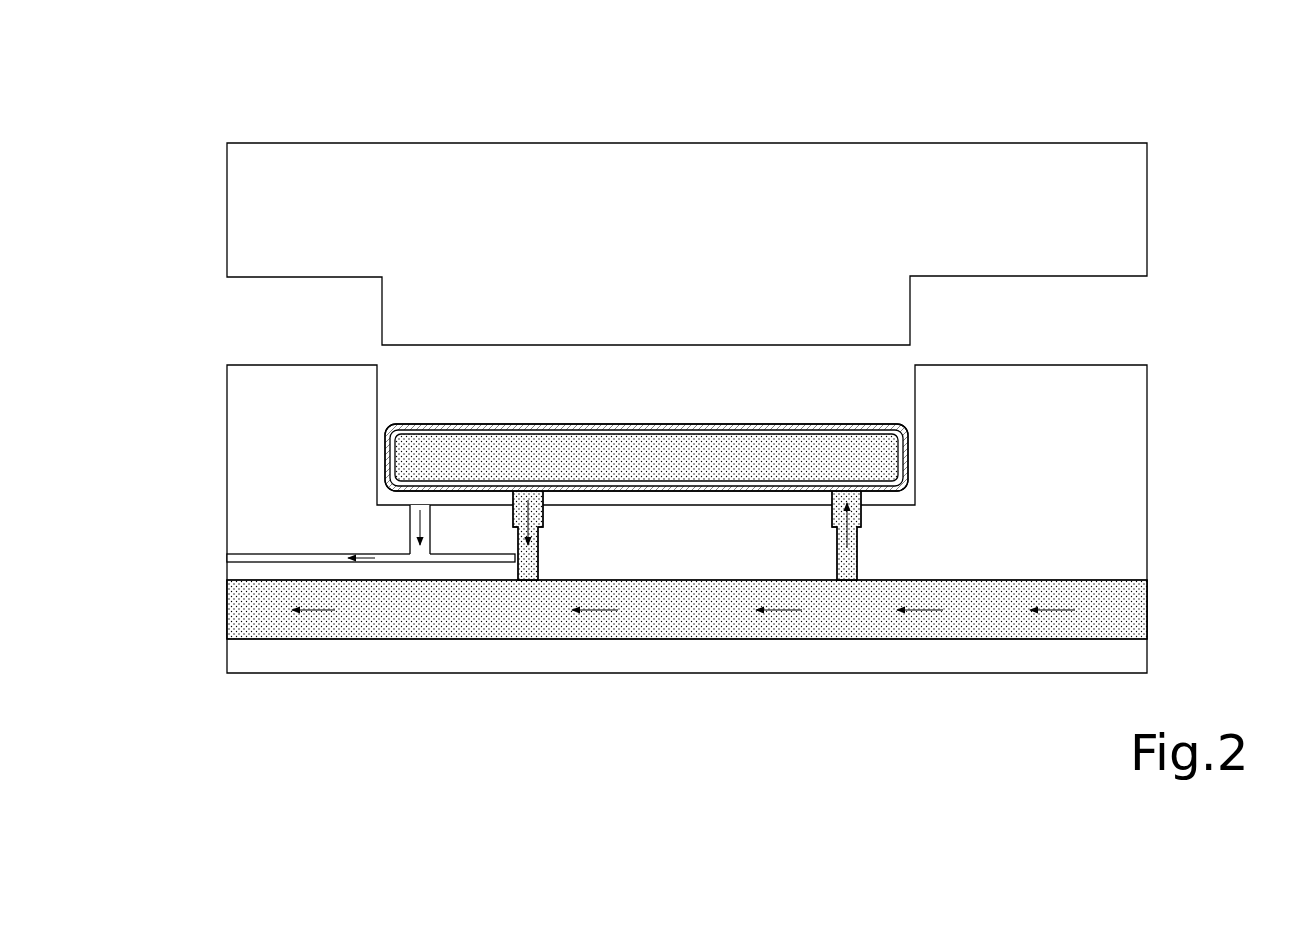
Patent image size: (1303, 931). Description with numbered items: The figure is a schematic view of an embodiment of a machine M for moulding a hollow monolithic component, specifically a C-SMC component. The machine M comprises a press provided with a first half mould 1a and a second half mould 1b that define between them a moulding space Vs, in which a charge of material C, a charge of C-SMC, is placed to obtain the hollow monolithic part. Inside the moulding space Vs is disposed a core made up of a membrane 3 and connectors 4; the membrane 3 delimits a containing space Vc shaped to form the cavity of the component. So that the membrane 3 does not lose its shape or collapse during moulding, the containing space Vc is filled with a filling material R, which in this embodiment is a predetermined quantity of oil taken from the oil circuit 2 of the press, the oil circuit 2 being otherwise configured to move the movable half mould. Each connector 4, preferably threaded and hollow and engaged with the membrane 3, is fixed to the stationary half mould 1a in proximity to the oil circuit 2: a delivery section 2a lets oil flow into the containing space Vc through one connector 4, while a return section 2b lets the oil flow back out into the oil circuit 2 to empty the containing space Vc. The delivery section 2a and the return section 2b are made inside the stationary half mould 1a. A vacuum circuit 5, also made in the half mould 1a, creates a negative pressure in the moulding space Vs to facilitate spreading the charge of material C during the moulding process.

The machine M is at (286, 123).
The first half mould 1a is at (1170, 481).
The second half mould 1b is at (1168, 209).
The oil circuit 2 is at (224, 612).
The delivery section 2a is at (860, 556).
The return section 2b is at (541, 554).
The membrane 3 is at (695, 421).
The connector 4 is at (547, 497).
The vacuum circuit 5 is at (250, 550).
The charge of material C is at (565, 423).
The containing space Vc is at (746, 462).
The moulding space Vs is at (856, 393).
The filling material R is at (646, 457).